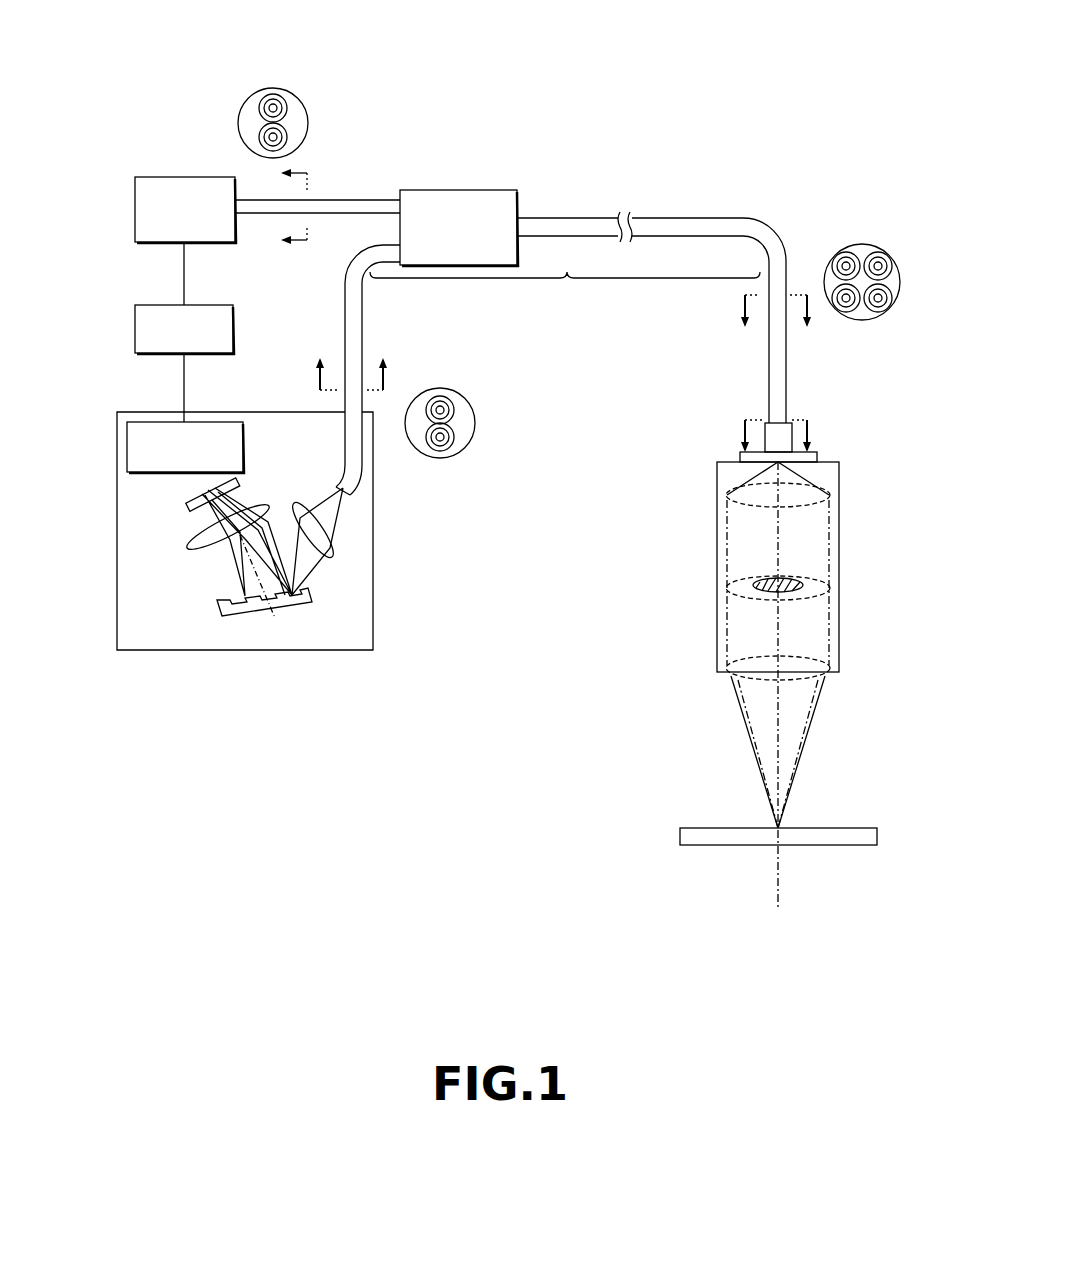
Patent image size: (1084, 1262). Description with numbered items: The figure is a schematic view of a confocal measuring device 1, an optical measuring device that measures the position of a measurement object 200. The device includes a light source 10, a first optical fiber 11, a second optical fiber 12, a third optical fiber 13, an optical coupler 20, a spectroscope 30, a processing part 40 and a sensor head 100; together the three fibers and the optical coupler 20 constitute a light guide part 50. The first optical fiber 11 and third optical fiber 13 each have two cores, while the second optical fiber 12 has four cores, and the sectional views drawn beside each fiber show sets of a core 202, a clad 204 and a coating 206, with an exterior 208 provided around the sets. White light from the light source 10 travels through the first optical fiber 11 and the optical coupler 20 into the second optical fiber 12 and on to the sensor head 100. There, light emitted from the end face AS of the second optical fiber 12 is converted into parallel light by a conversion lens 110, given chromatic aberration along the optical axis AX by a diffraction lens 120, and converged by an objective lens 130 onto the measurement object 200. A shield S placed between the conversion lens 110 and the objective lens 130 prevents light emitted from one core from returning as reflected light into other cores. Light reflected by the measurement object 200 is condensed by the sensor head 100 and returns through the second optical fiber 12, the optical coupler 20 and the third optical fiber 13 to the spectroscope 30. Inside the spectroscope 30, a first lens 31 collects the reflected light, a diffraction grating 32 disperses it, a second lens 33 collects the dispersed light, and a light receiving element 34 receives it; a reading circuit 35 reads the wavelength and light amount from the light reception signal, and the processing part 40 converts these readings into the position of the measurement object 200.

The confocal measuring device 1 is at (818, 112).
The light source 10 is at (181, 177).
The first optical fiber 11 is at (350, 200).
The second optical fiber 12 is at (723, 218).
The third optical fiber 13 is at (368, 316).
The optical coupler 20 is at (455, 190).
The spectroscope 30 is at (266, 412).
The first lens 31 is at (343, 542).
The diffraction grating 32 is at (305, 612).
The second lens 33 is at (197, 548).
The light receiving element 34 is at (192, 507).
The reading circuit 35 is at (127, 455).
The processing part 40 is at (135, 332).
The light guide part 50 is at (565, 293).
The sensor head 100 is at (770, 559).
The conversion lens 110 is at (832, 492).
The diffraction lens 120 is at (832, 585).
The objective lens 130 is at (842, 668).
The measurement object 200 is at (680, 838).
The core 202 is at (285, 100).
The clad 204 is at (273, 104).
The coating 206 is at (266, 100).
The exterior 208 is at (300, 123).
The end face AS is at (725, 410).
The shield S is at (762, 590).
The optical axis AX is at (778, 703).